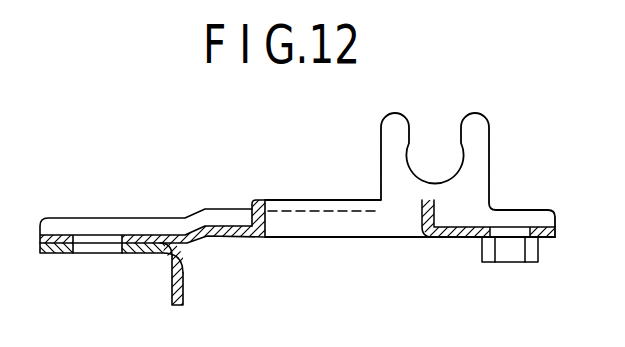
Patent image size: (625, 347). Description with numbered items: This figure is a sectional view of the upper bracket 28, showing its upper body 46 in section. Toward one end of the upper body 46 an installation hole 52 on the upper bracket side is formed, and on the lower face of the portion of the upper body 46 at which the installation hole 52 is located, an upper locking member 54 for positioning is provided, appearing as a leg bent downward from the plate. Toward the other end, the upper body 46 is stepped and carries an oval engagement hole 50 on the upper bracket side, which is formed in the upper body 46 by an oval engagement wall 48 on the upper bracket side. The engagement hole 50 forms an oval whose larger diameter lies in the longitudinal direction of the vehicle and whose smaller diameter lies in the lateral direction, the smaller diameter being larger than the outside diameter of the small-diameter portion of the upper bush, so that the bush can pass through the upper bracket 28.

The upper bracket 28 is at (513, 141).
The upper body 46 is at (187, 237).
The oval engagement wall 48 is at (252, 202).
The engagement hole 50 is at (267, 228).
The installation hole 52 is at (93, 238).
The upper locking member 54 is at (185, 260).